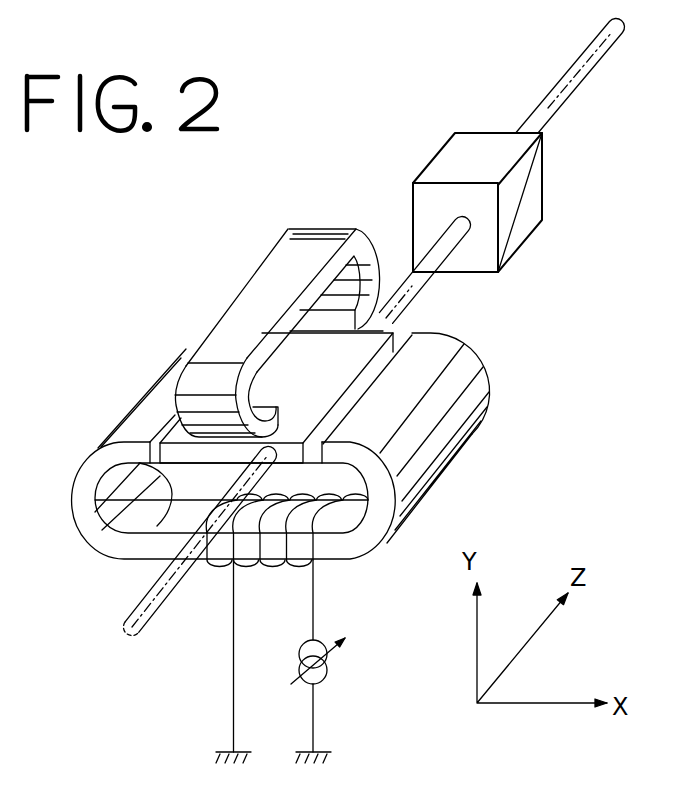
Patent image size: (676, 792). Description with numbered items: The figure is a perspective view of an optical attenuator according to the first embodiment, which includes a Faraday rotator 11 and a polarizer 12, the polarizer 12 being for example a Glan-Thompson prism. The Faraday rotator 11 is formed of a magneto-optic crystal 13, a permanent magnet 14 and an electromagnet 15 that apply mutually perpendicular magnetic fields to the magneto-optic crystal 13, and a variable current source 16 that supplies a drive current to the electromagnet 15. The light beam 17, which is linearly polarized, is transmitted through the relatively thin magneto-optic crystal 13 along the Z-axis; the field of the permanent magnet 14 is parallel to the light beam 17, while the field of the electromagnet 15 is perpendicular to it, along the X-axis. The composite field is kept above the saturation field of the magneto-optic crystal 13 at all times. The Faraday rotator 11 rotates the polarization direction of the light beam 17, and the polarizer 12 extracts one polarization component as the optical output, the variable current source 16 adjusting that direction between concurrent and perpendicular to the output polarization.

The Faraday rotator 11 is at (211, 268).
The polarizer 12 is at (458, 145).
The magneto-optic crystal 13 is at (348, 365).
The permanent magnet 14 is at (305, 232).
The electromagnet 15 is at (473, 395).
The variable current source 16 is at (330, 677).
The light beam 17 is at (131, 607).